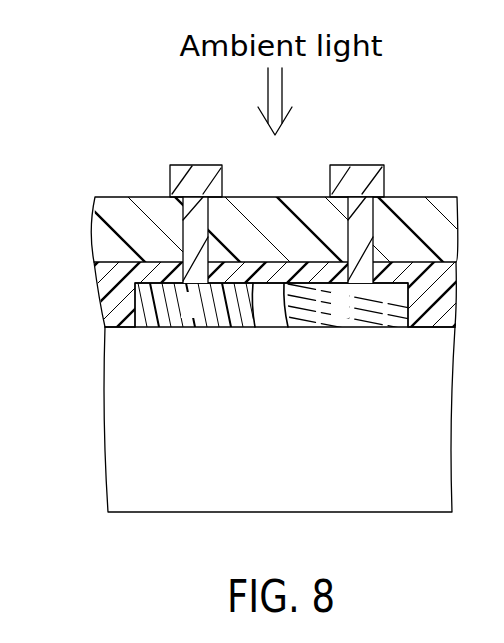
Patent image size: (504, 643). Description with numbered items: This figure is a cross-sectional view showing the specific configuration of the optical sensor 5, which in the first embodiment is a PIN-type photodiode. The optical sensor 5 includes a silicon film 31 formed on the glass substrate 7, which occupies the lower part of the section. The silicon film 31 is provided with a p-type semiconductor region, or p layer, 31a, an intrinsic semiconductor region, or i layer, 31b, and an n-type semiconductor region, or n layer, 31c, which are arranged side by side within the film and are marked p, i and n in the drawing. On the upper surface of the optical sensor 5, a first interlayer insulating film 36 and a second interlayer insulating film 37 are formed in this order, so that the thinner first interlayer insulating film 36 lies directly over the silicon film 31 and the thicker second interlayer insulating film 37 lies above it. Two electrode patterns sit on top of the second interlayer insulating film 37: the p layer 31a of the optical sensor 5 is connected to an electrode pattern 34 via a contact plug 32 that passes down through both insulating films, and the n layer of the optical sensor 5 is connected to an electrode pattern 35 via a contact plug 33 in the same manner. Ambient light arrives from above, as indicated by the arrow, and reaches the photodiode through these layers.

The optical sensor 5 is at (243, 357).
The glass substrate 7 is at (113, 415).
The silicon film 31 is at (243, 333).
The p-type semiconductor region 31a is at (196, 320).
The intrinsic semiconductor region 31b is at (281, 318).
The n-type semiconductor region 31c is at (349, 333).
The contact plug 32 is at (183, 237).
The contact plug 33 is at (360, 228).
The electrode pattern 34 is at (200, 166).
The electrode pattern 35 is at (354, 168).
The first interlayer insulating film 36 is at (110, 283).
The second interlayer insulating film 37 is at (102, 229).